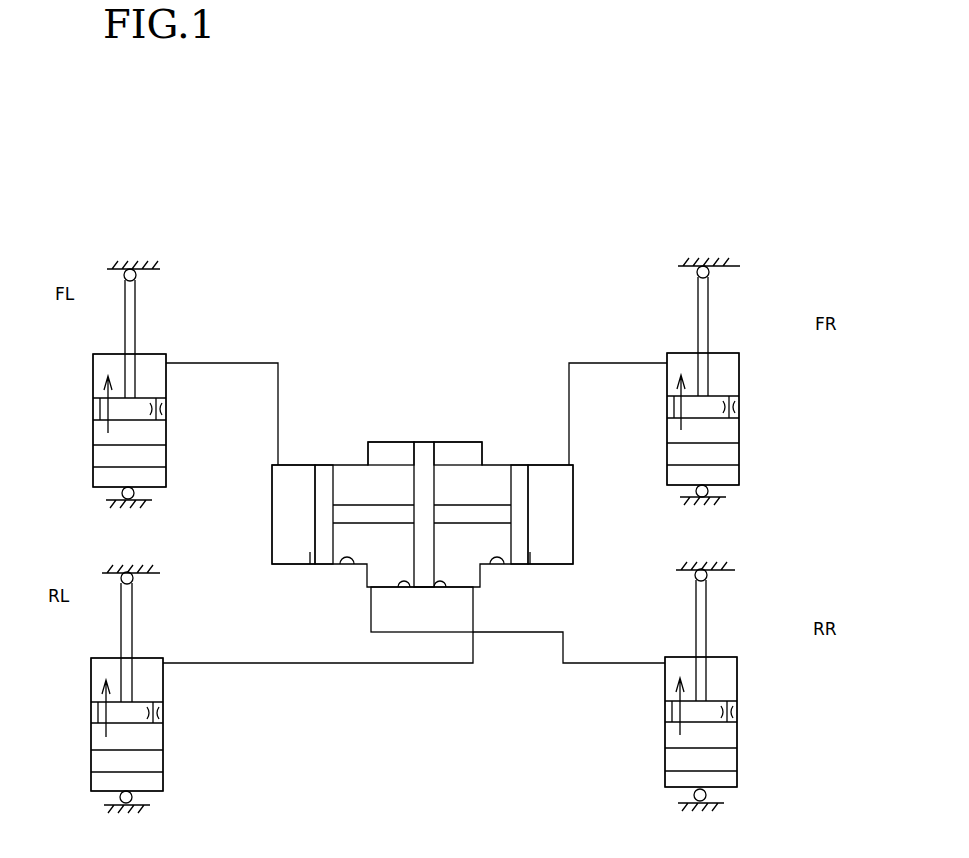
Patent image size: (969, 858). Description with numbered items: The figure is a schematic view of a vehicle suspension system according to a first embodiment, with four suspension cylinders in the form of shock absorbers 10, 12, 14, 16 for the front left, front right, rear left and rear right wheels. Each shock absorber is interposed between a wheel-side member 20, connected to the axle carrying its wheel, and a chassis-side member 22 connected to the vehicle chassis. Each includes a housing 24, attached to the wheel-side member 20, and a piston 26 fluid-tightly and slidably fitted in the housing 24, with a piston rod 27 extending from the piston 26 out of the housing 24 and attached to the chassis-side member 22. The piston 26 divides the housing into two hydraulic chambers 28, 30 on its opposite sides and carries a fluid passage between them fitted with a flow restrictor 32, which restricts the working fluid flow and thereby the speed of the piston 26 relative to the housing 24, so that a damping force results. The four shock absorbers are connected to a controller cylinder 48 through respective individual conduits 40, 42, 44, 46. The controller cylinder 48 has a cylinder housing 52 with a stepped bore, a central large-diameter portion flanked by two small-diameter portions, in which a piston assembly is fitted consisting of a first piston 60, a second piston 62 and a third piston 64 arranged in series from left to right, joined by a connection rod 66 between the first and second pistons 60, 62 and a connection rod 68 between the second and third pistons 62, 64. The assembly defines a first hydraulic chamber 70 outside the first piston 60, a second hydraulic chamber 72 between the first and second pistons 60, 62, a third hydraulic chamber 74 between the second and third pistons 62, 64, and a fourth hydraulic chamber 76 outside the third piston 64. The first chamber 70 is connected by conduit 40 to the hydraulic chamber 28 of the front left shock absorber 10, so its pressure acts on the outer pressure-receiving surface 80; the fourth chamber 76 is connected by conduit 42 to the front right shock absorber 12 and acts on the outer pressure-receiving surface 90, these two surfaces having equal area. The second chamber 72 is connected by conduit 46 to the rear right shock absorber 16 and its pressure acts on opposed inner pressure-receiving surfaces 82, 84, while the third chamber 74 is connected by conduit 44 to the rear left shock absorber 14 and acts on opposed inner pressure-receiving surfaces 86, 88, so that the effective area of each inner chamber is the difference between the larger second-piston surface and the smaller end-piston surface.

The shock absorber 10 is at (152, 334).
The shock absorber 12 is at (686, 334).
The shock absorber 14 is at (146, 649).
The shock absorber 16 is at (686, 642).
The wheel-side member 20 is at (110, 502).
The chassis-side member 22 is at (110, 263).
The housing 24 is at (93, 360).
The piston 26 is at (100, 405).
The piston rod 27 is at (128, 323).
The hydraulic chamber 28 is at (148, 357).
The hydraulic chamber 30 is at (100, 437).
The flow restrictor 32 is at (162, 412).
The individual conduit 40 is at (237, 362).
The individual conduit 42 is at (608, 360).
The individual conduit 44 is at (273, 663).
The individual conduit 46 is at (543, 632).
The controller cylinder 48 is at (416, 439).
The cylinder housing 52 is at (272, 473).
The first piston 60 is at (327, 470).
The second piston 62 is at (427, 447).
The third piston 64 is at (518, 473).
The connection rod 66 is at (360, 517).
The connection rod 68 is at (488, 517).
The first hydraulic chamber 70 is at (270, 513).
The second hydraulic chamber 72 is at (398, 448).
The third hydraulic chamber 74 is at (465, 448).
The fourth hydraulic chamber 76 is at (560, 512).
The outer pressure-receiving surface 80 is at (315, 560).
The inner pressure-receiving surface 82 is at (348, 562).
The inner pressure-receiving surface 84 is at (407, 583).
The inner pressure-receiving surface 86 is at (437, 584).
The inner pressure-receiving surface 88 is at (497, 562).
The outer pressure-receiving surface 90 is at (533, 563).